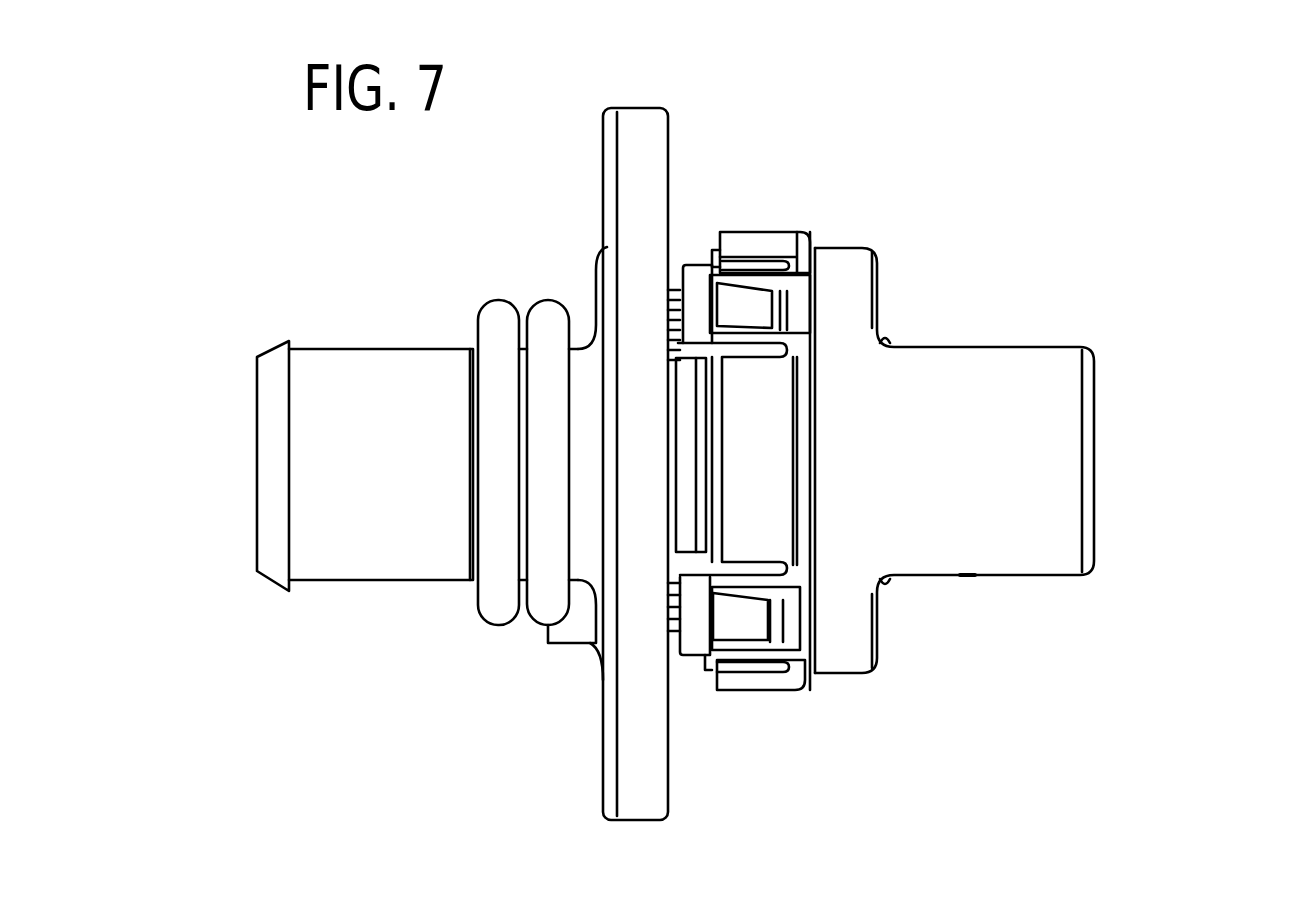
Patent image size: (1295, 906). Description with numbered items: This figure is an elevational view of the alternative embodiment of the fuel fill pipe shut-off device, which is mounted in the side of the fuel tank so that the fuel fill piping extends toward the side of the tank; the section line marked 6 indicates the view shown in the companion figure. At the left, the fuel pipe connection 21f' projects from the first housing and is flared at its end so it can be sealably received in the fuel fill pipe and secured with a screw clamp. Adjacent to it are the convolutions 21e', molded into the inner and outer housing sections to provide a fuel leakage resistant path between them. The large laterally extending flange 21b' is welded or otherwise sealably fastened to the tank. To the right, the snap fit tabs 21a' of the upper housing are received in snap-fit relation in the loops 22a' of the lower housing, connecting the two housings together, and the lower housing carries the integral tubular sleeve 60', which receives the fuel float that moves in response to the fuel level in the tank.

The fuel pipe connection 21f' is at (365, 415).
The convolutions 21e' is at (524, 419).
The flange 21b' is at (570, 464).
The loops 22a' is at (736, 461).
The snap fit tabs 21a' is at (811, 458).
The tubular sleeve 60' is at (954, 457).
The section line 6- 6 is at (98, 362).